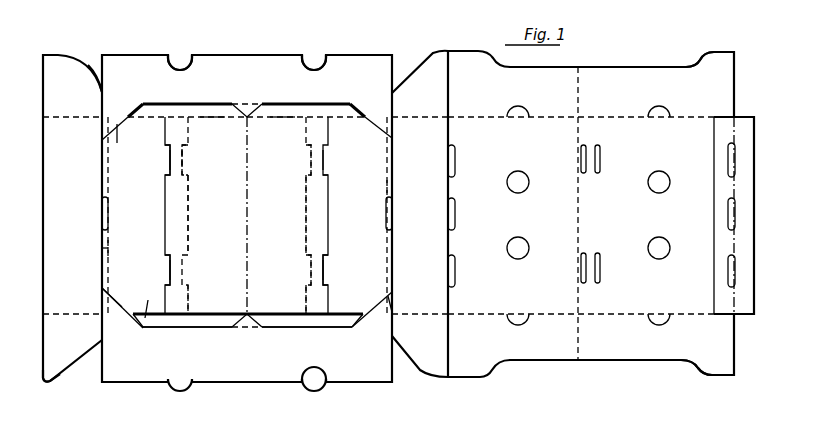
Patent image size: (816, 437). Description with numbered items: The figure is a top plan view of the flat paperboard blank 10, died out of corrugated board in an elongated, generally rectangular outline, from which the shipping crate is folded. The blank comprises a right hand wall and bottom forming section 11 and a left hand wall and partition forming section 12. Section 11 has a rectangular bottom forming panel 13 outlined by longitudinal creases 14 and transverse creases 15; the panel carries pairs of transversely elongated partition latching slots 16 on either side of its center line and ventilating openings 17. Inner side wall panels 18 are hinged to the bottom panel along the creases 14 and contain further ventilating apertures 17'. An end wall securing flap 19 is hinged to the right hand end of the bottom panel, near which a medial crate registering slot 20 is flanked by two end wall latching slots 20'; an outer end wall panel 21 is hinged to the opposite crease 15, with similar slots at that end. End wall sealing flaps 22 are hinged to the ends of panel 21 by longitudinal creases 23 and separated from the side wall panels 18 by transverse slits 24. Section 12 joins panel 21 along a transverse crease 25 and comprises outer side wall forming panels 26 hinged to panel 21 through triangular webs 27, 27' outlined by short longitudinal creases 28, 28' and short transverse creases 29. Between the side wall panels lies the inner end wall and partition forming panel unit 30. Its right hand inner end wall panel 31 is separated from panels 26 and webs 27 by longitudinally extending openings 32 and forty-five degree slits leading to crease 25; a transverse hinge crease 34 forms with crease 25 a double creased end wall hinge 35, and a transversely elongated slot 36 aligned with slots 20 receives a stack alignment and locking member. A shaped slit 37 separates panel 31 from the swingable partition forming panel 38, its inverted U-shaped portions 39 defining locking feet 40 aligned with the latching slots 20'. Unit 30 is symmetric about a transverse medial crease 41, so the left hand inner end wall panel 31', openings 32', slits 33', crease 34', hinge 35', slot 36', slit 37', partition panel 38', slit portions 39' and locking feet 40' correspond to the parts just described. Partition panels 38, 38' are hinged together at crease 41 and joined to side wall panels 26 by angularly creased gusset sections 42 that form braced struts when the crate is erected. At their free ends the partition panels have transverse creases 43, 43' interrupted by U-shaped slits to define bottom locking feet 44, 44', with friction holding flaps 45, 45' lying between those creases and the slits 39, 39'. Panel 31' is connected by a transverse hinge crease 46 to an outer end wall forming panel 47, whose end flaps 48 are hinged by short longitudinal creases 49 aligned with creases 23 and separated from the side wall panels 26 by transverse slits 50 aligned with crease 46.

The paperboard blank 10 is at (103, 383).
The right hand wall and bottom forming section 11 is at (551, 360).
The left hand wall and partition forming section 12 is at (339, 381).
The bottom forming panel 13 is at (614, 314).
The longitudinal creases 14 is at (546, 117).
The transverse creases 15 is at (455, 294).
The partition latching slots 16 is at (597, 175).
The ventilating openings 17 is at (588, 215).
The ventilating apertures 17' is at (603, 215).
The inner side wall panels 18 is at (645, 67).
The end wall securing flap 19 is at (718, 192).
The crate registering slot 20 is at (591, 214).
The end wall latching slots 20' is at (614, 190).
The outer end wall panel 21 is at (447, 132).
The end wall sealing flaps 22 is at (431, 59).
The longitudinal creases 23 is at (420, 215).
The transverse slits 24 is at (450, 93).
The transverse crease 25 is at (394, 170).
The outer side wall forming panels 26 is at (226, 68).
The triangular webs 27 is at (383, 208).
The triangular webs 27' is at (127, 203).
The short longitudinal creases 28 is at (375, 213).
The short longitudinal creases 28' is at (117, 319).
The short transverse creases 29 is at (393, 116).
The inner end wall and partition forming panel unit 30 is at (222, 299).
The inner end wall panel 31 is at (307, 330).
The left hand inner end wall panel 31' is at (137, 332).
The longitudinally extending opening 32 is at (249, 199).
The longitudinally extending opening 32' is at (187, 95).
The slit 33' is at (132, 136).
The transverse hinge crease 34 is at (364, 190).
The transverse hinge crease 34' is at (127, 243).
The double creased end wall hinge 35 is at (410, 142).
The double creased end wall hinge 35' is at (85, 215).
The transversely elongated slot 36 is at (408, 213).
The transversely elongated slot 36' is at (83, 213).
The shaped slit 37 is at (334, 215).
The shaped slit 37' is at (156, 215).
The swingable partition forming panel 38 is at (291, 98).
The partition forming panel 38' is at (222, 100).
The inverted U-shaped slit portions 39 is at (342, 259).
The inverted U-shaped slit portions 39' is at (174, 215).
The locking feet 40 is at (350, 207).
The locking feet 40' is at (147, 215).
The transverse medial crease 41 is at (250, 194).
The angularly creased gusset sections 42 is at (257, 110).
The transversely extending creases 43 is at (313, 244).
The transversely extending creases 43' is at (208, 244).
The bottom locking feet 44 is at (290, 215).
The bottom locking feet 44' is at (207, 153).
The friction holding flap 45 is at (339, 179).
The friction holding flap 45' is at (206, 168).
The transverse hinge crease 46 is at (102, 253).
The outer end wall forming panel 47 is at (46, 203).
The end flaps 48 is at (53, 378).
The short longitudinal creases 49 is at (65, 116).
The transverse slits 50 is at (105, 98).